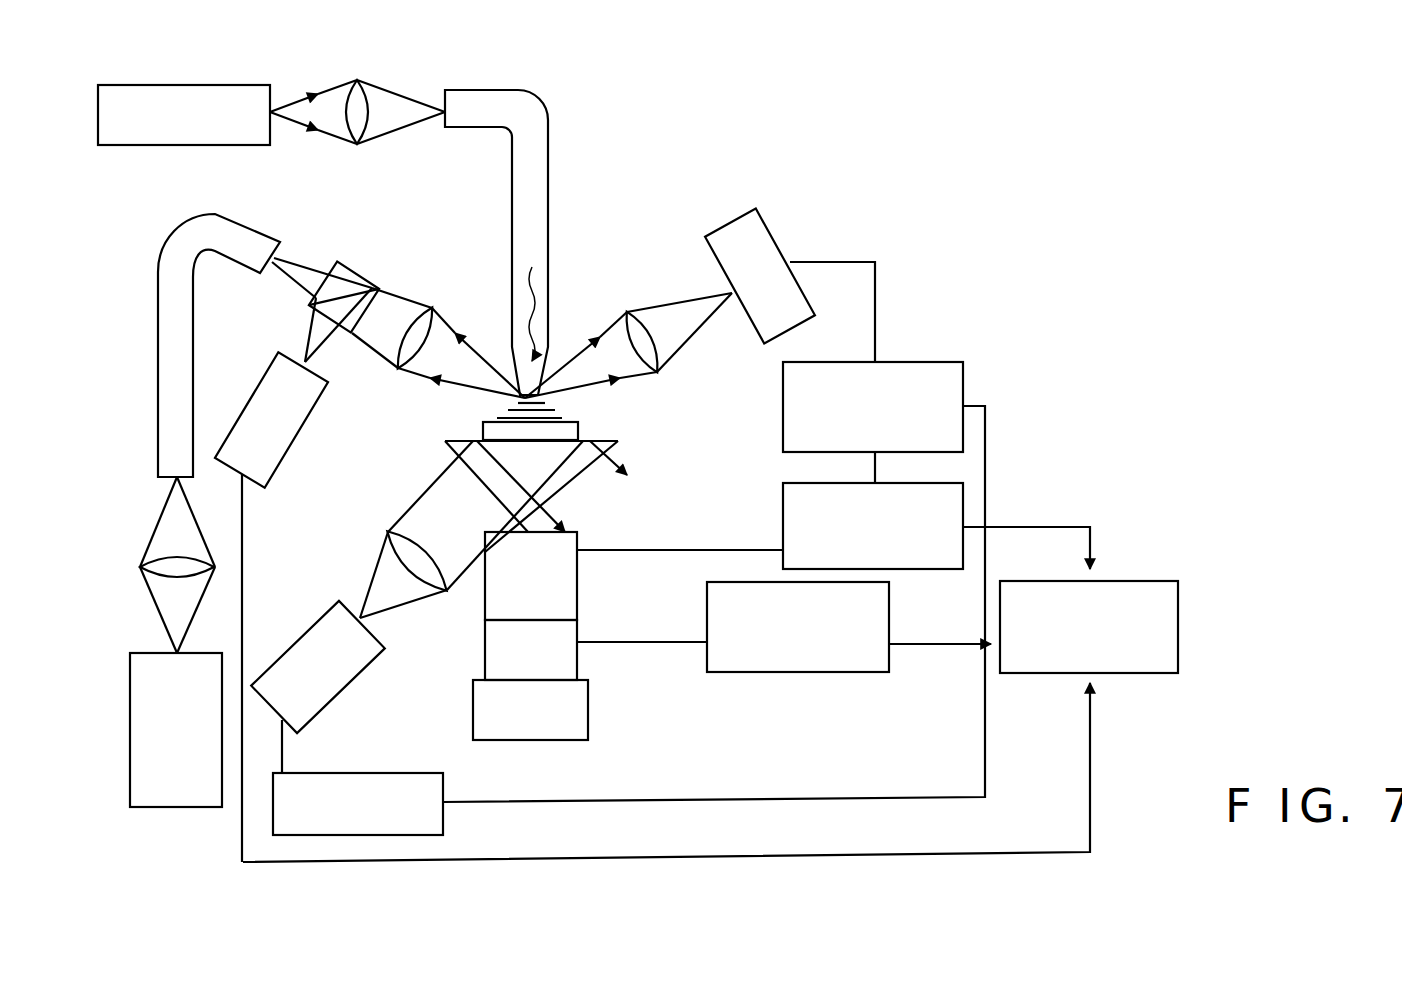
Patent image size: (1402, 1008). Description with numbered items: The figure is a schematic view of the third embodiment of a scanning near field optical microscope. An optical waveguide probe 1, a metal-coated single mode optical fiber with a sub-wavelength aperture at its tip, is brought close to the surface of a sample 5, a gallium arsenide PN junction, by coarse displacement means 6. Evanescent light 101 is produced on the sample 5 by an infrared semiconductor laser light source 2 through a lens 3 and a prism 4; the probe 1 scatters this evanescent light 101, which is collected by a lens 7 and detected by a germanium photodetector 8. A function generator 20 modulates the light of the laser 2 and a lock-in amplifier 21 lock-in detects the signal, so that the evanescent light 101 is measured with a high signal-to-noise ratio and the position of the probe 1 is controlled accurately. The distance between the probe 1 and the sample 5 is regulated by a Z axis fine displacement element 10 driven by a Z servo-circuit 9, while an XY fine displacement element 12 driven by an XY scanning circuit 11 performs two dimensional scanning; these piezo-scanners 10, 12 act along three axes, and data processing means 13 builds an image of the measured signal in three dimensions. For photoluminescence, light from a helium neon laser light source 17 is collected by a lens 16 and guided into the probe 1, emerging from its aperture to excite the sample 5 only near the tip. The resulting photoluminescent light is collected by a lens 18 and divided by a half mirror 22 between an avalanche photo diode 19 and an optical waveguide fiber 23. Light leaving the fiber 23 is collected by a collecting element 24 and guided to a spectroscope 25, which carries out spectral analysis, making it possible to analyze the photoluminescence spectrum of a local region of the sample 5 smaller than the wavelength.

The optical waveguide probe 1 is at (548, 185).
The laser light source 2 is at (360, 670).
The lens 3 is at (388, 532).
The prism 4 is at (605, 440).
The sample 5 is at (483, 432).
The coarse displacement means 6 is at (588, 707).
The lens 7 is at (627, 312).
The photodetector 8 is at (785, 245).
The Z servo-circuit 9 is at (922, 362).
The Z axis fine displacement element 10 is at (577, 545).
The XY scanning circuit 11 is at (812, 672).
The XY fine displacement element 12 is at (577, 632).
The data processing means 13 is at (1140, 673).
The lens 16 is at (357, 144).
The laser light source 17 is at (172, 147).
The lens 18 is at (432, 308).
The avalanche photo diode 19 is at (295, 437).
The function generator 20 is at (443, 785).
The lock-in amplifier 21 is at (783, 505).
The half mirror 22 is at (360, 265).
The optical waveguide fiber 23 is at (245, 210).
The lens 24 is at (140, 567).
The spectroscope 25 is at (178, 807).
The evanescent light 101 is at (565, 408).